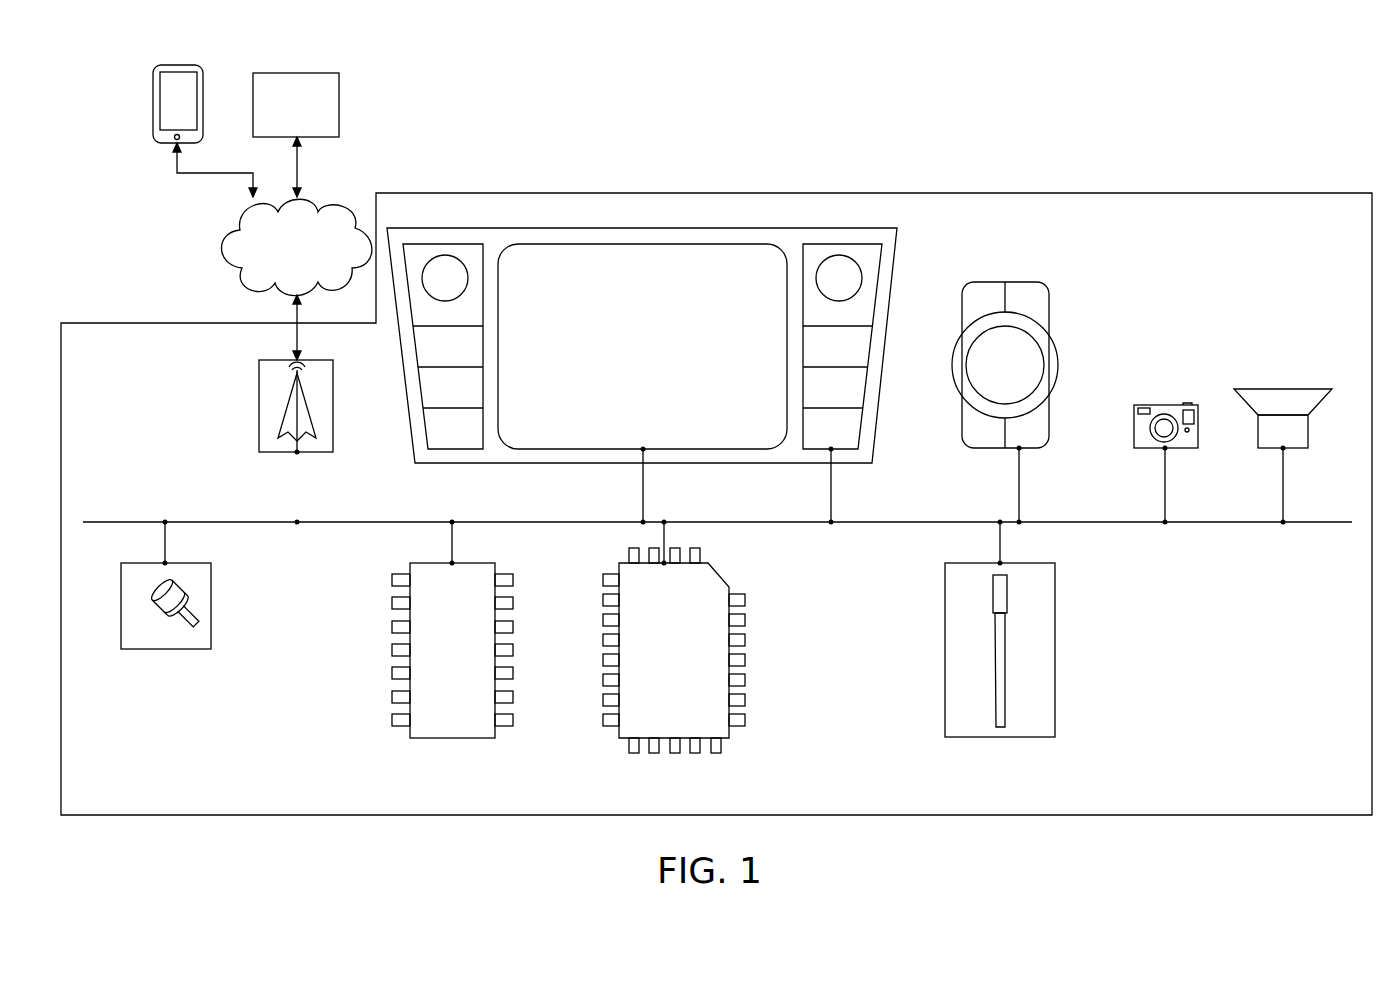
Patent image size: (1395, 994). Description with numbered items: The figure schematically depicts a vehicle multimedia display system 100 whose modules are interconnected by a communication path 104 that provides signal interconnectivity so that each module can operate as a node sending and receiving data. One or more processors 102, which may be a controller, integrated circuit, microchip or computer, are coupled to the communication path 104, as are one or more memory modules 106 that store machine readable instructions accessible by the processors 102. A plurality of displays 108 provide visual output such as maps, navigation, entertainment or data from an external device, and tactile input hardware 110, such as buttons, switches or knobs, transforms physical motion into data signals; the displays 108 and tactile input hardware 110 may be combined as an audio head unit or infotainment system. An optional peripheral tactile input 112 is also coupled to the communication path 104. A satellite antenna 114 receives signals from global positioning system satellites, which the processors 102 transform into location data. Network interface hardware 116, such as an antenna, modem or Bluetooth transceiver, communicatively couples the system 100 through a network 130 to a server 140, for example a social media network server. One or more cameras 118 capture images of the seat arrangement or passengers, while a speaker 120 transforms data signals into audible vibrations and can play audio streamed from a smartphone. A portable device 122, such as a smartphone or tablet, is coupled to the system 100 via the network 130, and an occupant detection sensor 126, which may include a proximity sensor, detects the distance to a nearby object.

The vehicle multimedia display system 100 is at (1160, 172).
The processors 102 is at (623, 740).
The communication path 104 is at (353, 523).
The memory modules 106 is at (452, 738).
The displays 108 is at (628, 268).
The tactile input hardware 110 is at (412, 252).
The peripheral tactile input 112 is at (995, 282).
The satellite antenna 114 is at (1000, 737).
The network interface hardware 116 is at (259, 367).
The cameras 118 is at (1167, 405).
The speaker 120 is at (1280, 389).
The portable device 122 is at (153, 108).
The occupant detection sensor 126 is at (165, 649).
The network 130 is at (224, 243).
The server 140 is at (339, 108).